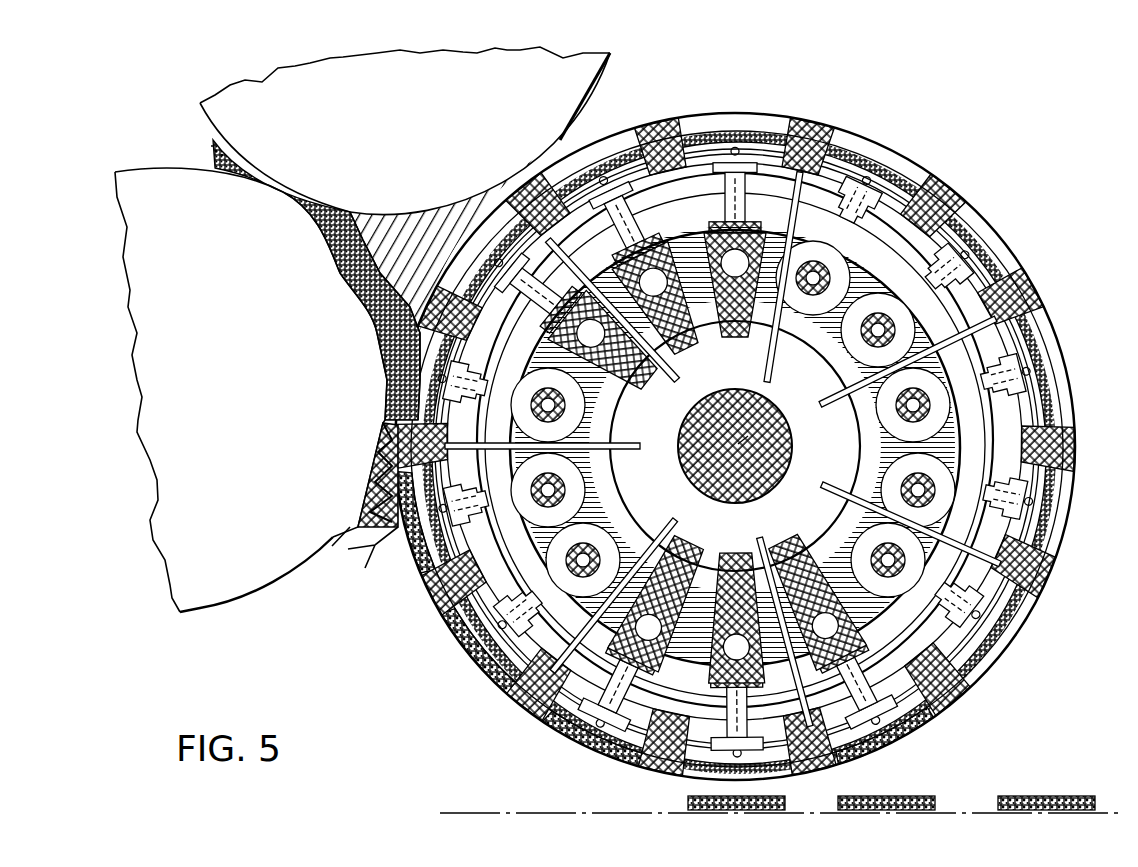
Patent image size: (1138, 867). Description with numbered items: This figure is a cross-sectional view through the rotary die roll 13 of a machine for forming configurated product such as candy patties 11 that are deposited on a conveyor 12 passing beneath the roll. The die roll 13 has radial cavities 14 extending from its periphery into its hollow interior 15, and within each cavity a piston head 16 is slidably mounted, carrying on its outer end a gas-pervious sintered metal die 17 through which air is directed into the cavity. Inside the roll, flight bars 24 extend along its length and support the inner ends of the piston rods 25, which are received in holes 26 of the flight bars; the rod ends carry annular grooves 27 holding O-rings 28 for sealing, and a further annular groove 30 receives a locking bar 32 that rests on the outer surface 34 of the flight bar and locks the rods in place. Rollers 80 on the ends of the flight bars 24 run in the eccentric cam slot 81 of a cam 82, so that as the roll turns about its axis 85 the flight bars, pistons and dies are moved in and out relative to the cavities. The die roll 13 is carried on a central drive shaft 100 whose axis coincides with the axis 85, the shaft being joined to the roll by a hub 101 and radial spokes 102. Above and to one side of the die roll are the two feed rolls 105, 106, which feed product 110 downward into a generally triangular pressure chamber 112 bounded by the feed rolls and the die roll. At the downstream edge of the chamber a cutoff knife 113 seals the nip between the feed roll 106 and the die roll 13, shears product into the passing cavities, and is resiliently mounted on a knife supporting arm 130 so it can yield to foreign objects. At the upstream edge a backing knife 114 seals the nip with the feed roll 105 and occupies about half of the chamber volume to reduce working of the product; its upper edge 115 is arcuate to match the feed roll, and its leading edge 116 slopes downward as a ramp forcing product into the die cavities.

The candy patties 11 is at (1085, 795).
The conveyor 12 is at (460, 808).
The rotary die roll 13 is at (945, 200).
The radial cavities 14 is at (728, 112).
The hollow interior 15 is at (918, 186).
The piston heads 16 is at (757, 146).
The gas-pervious sintered metal die 17 is at (752, 128).
The flight bars 24 is at (740, 365).
The piston rods 25 is at (735, 440).
The holes 26 is at (735, 445).
The annular grooves 27 is at (772, 240).
The O-rings 28 is at (778, 250).
The annular groove 30 is at (632, 238).
The locking bar 32 is at (762, 232).
The outer surface 34 is at (538, 322).
The rollers 80 is at (853, 378).
The eccentric cam slot 81 is at (957, 443).
The cam 82 is at (975, 420).
The axis 85 is at (730, 455).
The central drive shaft 100 is at (790, 440).
The hub 101 is at (735, 446).
The radial spokes 102 is at (768, 345).
The feed roll 105 is at (434, 114).
The feed roll 106 is at (269, 394).
The product 110 is at (216, 149).
The pressure chamber 112 is at (370, 275).
The cutoff knife 113 is at (385, 440).
The backing knife 114 is at (425, 240).
The upper edge 115 is at (395, 212).
The leading edge 116 is at (360, 243).
The knife supporting arm 130 is at (356, 550).